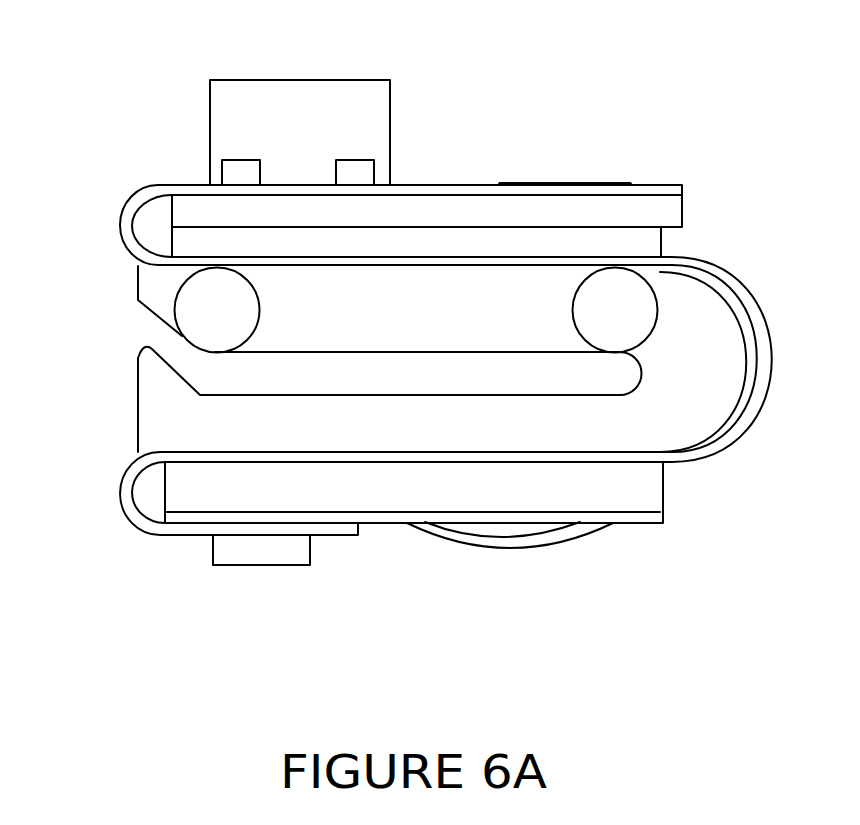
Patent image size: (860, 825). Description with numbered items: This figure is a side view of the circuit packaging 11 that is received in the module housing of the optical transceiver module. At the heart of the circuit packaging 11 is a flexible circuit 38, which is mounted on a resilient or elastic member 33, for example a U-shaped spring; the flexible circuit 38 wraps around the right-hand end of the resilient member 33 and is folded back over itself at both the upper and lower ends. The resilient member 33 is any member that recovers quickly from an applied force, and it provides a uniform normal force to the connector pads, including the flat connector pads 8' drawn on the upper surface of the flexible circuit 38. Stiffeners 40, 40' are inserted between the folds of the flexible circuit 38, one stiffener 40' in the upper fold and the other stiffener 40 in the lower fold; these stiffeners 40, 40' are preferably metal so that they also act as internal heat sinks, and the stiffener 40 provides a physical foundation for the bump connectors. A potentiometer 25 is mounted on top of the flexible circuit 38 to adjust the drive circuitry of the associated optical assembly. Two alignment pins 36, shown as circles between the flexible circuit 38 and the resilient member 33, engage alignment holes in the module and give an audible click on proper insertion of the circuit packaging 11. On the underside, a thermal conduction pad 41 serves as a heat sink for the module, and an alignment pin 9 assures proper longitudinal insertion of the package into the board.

The potentiometer 25 is at (333, 80).
The circuit packaging 11 is at (500, 128).
The flat connector pad 8' is at (569, 157).
The stiffener 40' is at (404, 228).
The flexible circuit 38 is at (722, 272).
The alignment pin 36 is at (240, 315).
The resilient member 33 is at (163, 397).
The stiffener 40 is at (430, 493).
The thermal conduction pad 41 is at (513, 548).
The alignment pin 9 is at (263, 565).